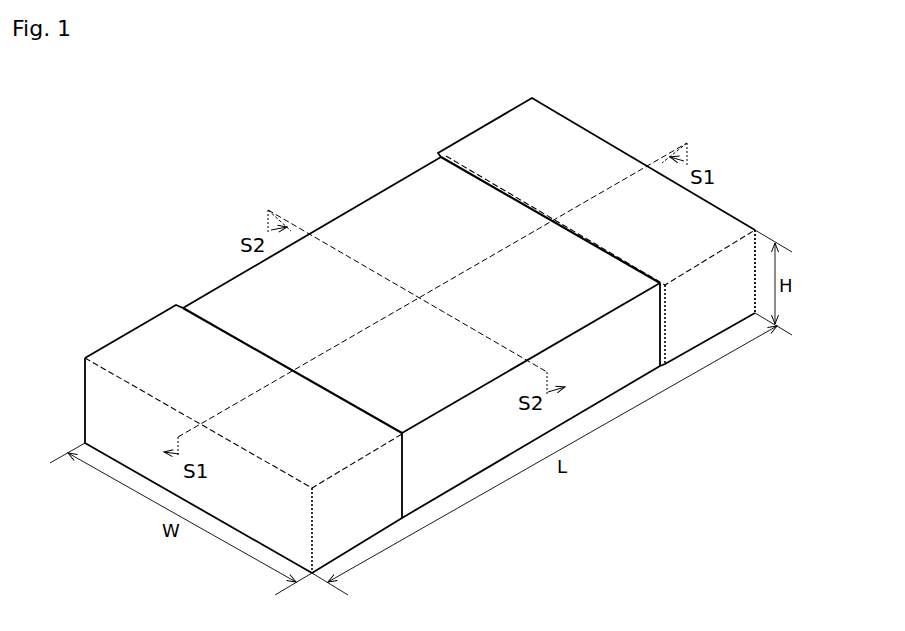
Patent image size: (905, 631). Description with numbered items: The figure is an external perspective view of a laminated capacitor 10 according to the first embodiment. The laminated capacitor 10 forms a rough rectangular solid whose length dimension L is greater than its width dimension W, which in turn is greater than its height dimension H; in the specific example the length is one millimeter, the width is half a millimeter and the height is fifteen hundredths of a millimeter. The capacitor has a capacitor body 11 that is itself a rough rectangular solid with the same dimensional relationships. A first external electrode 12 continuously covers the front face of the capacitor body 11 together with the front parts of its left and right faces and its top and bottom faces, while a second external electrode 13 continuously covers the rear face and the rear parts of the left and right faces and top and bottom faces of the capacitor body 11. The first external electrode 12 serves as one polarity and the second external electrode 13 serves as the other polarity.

The laminated capacitor 10 is at (222, 283).
The capacitor body 11 is at (382, 218).
The first external electrode 12 is at (157, 343).
The second external electrode 13 is at (513, 137).